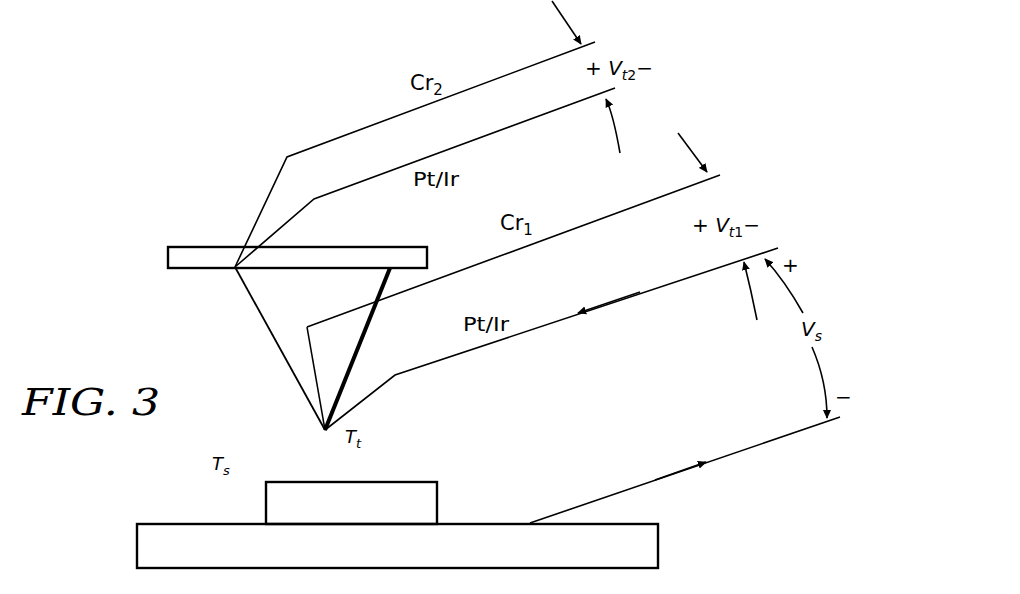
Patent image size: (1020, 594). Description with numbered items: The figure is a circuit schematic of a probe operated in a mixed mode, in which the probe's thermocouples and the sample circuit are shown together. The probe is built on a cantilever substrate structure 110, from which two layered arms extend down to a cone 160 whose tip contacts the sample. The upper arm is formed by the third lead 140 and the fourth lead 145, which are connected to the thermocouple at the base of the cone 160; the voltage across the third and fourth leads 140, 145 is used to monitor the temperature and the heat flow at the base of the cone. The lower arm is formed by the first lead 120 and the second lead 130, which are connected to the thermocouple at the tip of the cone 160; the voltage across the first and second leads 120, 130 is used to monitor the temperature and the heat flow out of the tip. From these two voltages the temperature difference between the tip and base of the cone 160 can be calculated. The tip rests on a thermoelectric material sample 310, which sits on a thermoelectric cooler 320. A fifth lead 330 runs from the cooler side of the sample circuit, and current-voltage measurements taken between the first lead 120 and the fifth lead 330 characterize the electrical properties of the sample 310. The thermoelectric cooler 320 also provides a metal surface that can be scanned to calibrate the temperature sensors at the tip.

The cantilever substrate structure 110 is at (205, 250).
The first lead 120 is at (665, 291).
The second lead 130 is at (605, 219).
The third lead 140 is at (510, 72).
The fourth lead 145 is at (530, 121).
The cone 160 is at (275, 333).
The thermoelectric material sample 310 is at (266, 500).
The thermoelectric cooler 320 is at (658, 545).
The fifth lead 330 is at (770, 441).